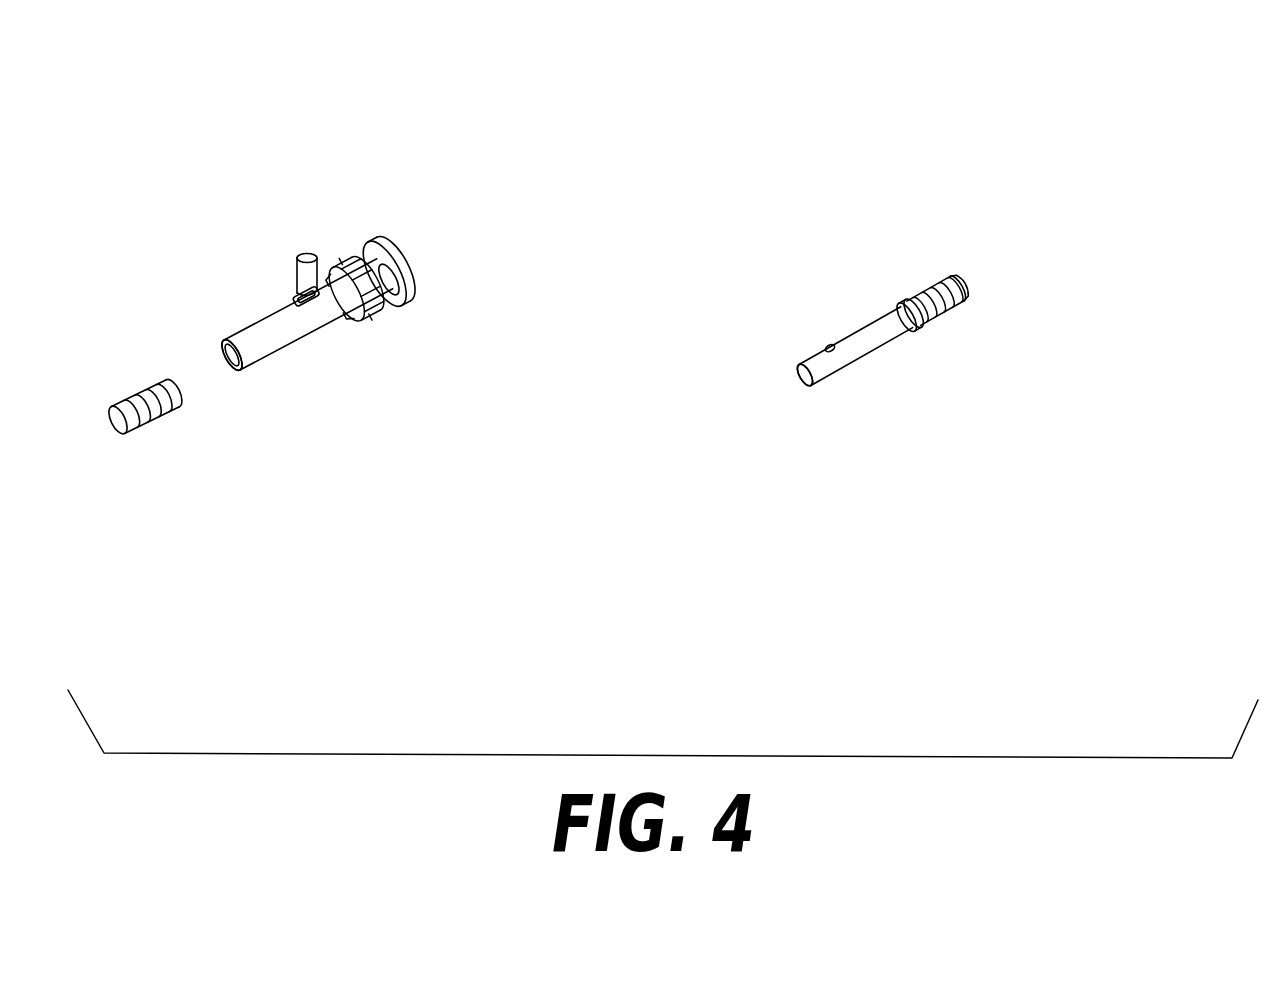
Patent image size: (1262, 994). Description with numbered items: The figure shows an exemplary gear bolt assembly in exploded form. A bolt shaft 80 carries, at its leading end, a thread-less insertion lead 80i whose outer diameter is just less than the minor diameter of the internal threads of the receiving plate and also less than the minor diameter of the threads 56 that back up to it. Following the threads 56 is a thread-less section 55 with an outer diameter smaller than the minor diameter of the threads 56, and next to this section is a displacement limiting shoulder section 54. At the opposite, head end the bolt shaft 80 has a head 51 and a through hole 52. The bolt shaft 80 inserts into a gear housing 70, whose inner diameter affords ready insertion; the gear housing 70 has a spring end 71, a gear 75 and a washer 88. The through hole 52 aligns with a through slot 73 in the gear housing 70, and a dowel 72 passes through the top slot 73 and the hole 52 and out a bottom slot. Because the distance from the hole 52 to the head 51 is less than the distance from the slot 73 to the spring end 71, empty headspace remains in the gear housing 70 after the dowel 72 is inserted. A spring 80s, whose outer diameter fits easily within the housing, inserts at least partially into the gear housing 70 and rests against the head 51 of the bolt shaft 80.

The gear housing 70 is at (322, 337).
The spring end 71 is at (253, 380).
The dowel 72 is at (307, 253).
The through slot 73 is at (293, 298).
The gear 75 is at (383, 315).
The washer 88 is at (432, 294).
The spring 80s is at (160, 428).
The bolt shaft 80 is at (943, 416).
The thread-less insertion lead 80i is at (973, 285).
The head of the bolt shaft 51 is at (798, 385).
The through hole 52 is at (837, 355).
The displacement limiting shoulder section 54 is at (903, 308).
The thread-less section 55 is at (948, 320).
The threads 56 is at (952, 325).